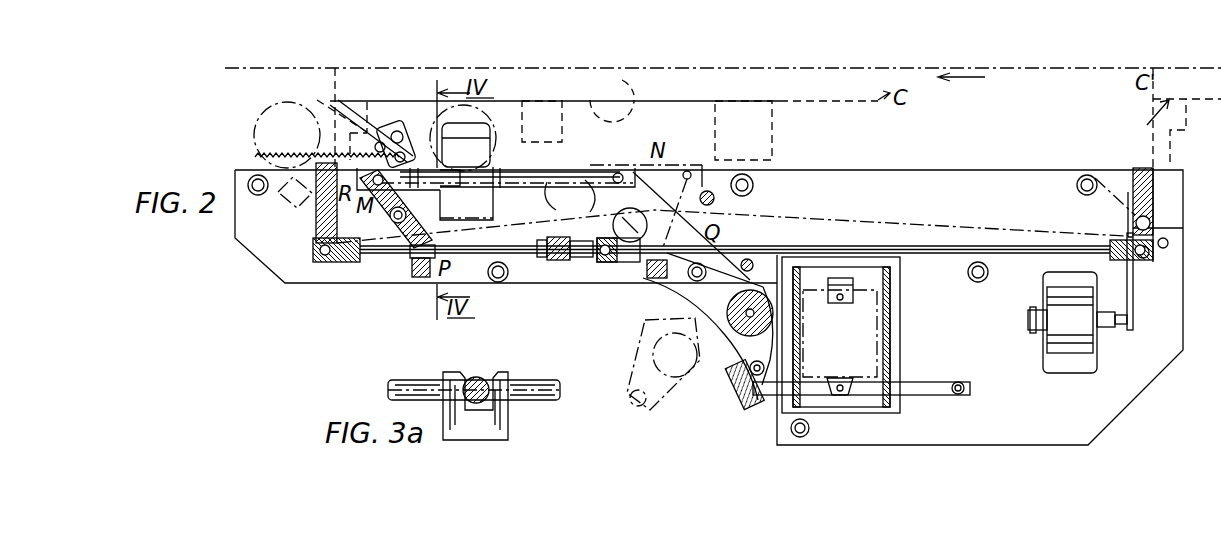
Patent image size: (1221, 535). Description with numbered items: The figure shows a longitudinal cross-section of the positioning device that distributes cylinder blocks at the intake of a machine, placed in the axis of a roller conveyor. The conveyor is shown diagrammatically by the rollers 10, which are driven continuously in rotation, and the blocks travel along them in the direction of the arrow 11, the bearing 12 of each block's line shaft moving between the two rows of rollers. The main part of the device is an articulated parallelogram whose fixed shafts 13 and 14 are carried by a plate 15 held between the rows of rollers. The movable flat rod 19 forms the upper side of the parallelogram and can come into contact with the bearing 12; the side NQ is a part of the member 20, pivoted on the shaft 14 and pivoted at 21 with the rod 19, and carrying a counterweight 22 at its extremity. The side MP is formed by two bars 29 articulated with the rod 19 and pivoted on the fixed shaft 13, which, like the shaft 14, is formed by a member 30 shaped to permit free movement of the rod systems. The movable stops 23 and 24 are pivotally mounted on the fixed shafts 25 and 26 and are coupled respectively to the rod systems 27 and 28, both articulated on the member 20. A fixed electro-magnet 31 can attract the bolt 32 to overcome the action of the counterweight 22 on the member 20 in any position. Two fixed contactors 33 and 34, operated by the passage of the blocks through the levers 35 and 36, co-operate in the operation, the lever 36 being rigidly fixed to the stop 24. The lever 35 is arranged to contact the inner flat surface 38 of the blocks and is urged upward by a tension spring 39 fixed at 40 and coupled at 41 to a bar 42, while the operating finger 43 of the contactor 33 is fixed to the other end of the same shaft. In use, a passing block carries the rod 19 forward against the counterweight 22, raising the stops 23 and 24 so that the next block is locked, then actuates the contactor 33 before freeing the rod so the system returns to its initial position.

In FIG. 2, the rollers 10 is at (296, 106).
In FIG. 2, the arrow 11 is at (723, 86).
In FIG. 2, the bearing 12 is at (336, 117).
In FIG. 2, the fixed shaft 13 is at (410, 253).
In FIG. 3a, the fixed shaft 13 is at (416, 380).
In FIG. 2, the fixed shaft 14 is at (650, 286).
In FIG. 2, the plate 15 is at (308, 275).
In FIG. 2, the movable flat rod 19 is at (570, 198).
In FIG. 2, the member 20 is at (707, 293).
In FIG. 2, the pivot 21 is at (621, 172).
In FIG. 2, the counterweight 22 is at (664, 356).
In FIG. 2, the movable stop 23 is at (318, 212).
In FIG. 2, the movable stop 24 is at (1150, 191).
In FIG. 2, the fixed shaft 25 is at (318, 232).
In FIG. 2, the fixed shaft 26 is at (1155, 226).
In FIG. 2, the rod system 27 is at (528, 253).
In FIG. 3a, the rod system 27 is at (478, 378).
In FIG. 2, the rod system 28 is at (785, 250).
In FIG. 2, the bars 29 is at (393, 209).
In FIG. 2, the member 30 is at (422, 261).
In FIG. 3a, the member 30 is at (495, 435).
In FIG. 2, the fixed electro-magnet 31 is at (870, 333).
In FIG. 2, the bolt 32 is at (737, 395).
In FIG. 2, the fixed contactor 33 is at (529, 191).
In FIG. 2, the fixed contactor 34 is at (1085, 342).
In FIG. 2, the lever 35 is at (388, 112).
In FIG. 2, the lever 36 is at (1134, 305).
In FIG. 2, the inner flat surface 38 is at (879, 108).
In FIG. 2, the tension spring 39 is at (287, 135).
In FIG. 2, the fixing point 40 is at (262, 157).
In FIG. 2, the coupling point 41 is at (437, 151).
In FIG. 2, the bar 42 is at (382, 134).
In FIG. 2, the operating finger 43 is at (440, 187).